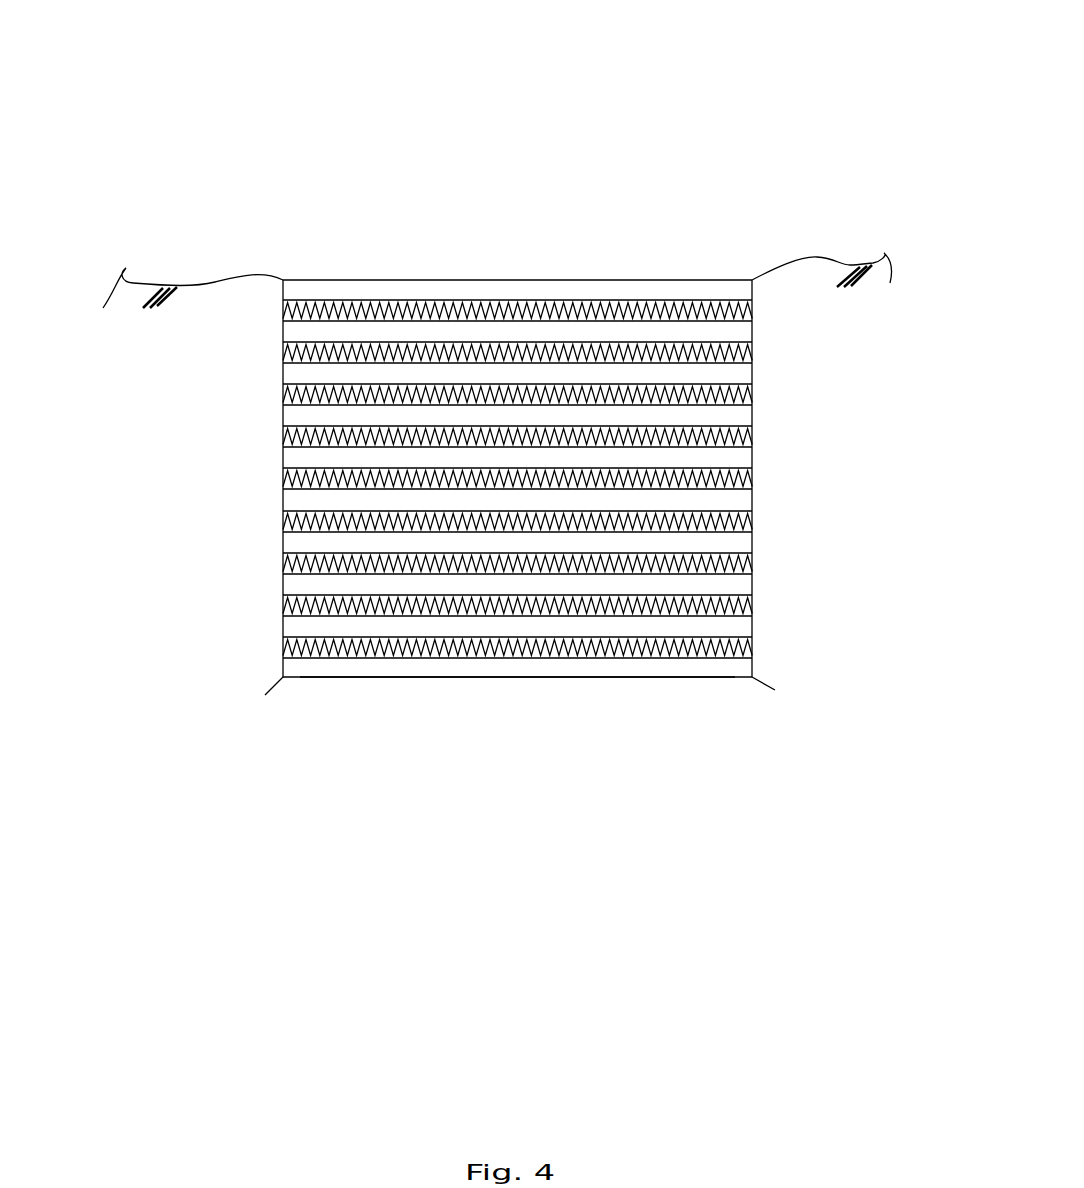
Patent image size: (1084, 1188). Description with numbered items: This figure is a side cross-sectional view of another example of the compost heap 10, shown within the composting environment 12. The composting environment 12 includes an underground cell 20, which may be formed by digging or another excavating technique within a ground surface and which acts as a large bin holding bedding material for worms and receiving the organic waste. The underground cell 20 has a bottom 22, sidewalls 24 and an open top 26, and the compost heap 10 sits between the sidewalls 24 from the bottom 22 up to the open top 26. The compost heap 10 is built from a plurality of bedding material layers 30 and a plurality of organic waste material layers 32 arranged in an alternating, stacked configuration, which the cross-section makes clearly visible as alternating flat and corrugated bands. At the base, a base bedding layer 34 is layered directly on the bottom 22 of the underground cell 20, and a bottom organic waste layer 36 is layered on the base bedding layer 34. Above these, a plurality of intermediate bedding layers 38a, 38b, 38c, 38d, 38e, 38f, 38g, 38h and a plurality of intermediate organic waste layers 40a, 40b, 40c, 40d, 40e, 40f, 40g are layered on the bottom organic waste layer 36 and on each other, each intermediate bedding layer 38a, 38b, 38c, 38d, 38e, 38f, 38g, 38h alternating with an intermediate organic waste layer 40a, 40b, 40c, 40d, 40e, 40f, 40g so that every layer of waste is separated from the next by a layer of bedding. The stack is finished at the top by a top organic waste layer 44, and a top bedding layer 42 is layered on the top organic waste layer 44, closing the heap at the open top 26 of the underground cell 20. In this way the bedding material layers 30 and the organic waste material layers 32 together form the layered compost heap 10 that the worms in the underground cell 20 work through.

The compost heap 10 is at (509, 236).
The composting environment 12 is at (823, 87).
The underground cell 20 is at (314, 709).
The bottom 22 is at (403, 679).
The sidewalls 24 is at (283, 677).
The open top 26 is at (694, 264).
The bedding material layers 30 is at (868, 399).
The organic waste material layers 32 is at (863, 493).
The base bedding layer 34 is at (752, 670).
The bottom organic waste layer 36 is at (283, 648).
The intermediate bedding layer 38a is at (752, 627).
The intermediate bedding layer 38b is at (752, 584).
The intermediate bedding layer 38c is at (752, 542).
The intermediate bedding layer 38d is at (752, 500).
The intermediate bedding layer 38e is at (752, 457).
The intermediate bedding layer 38f is at (752, 415).
The intermediate bedding layer 38g is at (752, 373).
The intermediate bedding layer 38h is at (752, 332).
The intermediate organic waste layer 40a is at (283, 605).
The intermediate organic waste layer 40b is at (283, 563).
The intermediate organic waste layer 40c is at (283, 521).
The intermediate organic waste layer 40d is at (283, 479).
The intermediate organic waste layer 40e is at (283, 437).
The intermediate organic waste layer 40f is at (283, 394).
The intermediate organic waste layer 40g is at (283, 352).
The top bedding layer 42 is at (752, 292).
The top organic waste layer 44 is at (283, 311).